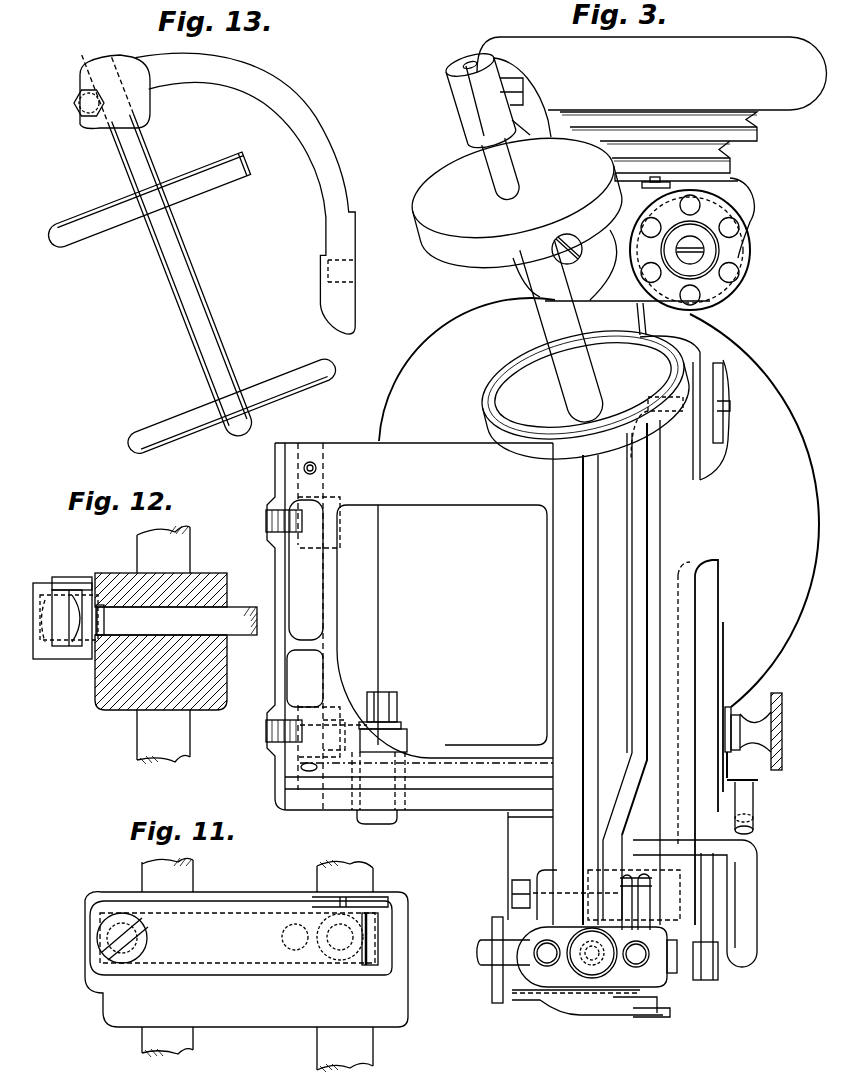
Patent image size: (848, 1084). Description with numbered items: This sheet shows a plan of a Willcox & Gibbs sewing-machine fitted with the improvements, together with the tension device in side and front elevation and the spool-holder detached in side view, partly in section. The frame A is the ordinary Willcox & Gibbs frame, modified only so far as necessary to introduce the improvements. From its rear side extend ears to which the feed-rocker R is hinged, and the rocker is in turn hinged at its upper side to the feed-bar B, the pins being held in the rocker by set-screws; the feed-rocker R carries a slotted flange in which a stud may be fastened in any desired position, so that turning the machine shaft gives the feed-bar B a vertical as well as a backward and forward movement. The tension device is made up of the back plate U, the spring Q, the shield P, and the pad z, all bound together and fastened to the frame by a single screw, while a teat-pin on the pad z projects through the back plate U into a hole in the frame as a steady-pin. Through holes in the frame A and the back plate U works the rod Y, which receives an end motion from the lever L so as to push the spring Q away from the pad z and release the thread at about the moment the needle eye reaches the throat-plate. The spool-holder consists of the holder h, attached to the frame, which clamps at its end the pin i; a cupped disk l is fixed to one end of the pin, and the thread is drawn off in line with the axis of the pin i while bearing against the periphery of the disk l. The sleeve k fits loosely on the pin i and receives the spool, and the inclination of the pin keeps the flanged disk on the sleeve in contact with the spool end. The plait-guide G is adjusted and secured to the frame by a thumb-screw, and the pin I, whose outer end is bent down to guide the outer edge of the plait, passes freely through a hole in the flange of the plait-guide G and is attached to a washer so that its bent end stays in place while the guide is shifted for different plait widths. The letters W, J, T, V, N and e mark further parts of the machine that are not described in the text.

In FIG. 3, the drum W is at (652, 73).
In FIG. 13, the holder h is at (246, 193).
In FIG. 3, the holder h is at (522, 97).
In FIG. 13, the pin i is at (180, 274).
In FIG. 3, the pin i is at (500, 168).
In FIG. 13, the wheel J is at (150, 199).
In FIG. 3, the wheel J is at (513, 543).
In FIG. 11, the wheel J is at (167, 957).
In FIG. 13, the sleeve k is at (189, 314).
In FIG. 3, the sleeve k is at (561, 331).
In FIG. 13, the cupped disk l is at (232, 406).
In FIG. 3, the cupped disk l is at (582, 386).
In FIG. 3, the hand wheel T is at (690, 250).
In FIG. 3, the frame A is at (473, 684).
In FIG. 12, the frame A is at (161, 645).
In FIG. 11, the frame A is at (246, 959).
In FIG. 3, the feed-rocker R is at (316, 626).
In FIG. 3, the feed-bar B is at (419, 758).
In FIG. 3, the plait-guide G is at (700, 770).
In FIG. 3, the rod Y is at (625, 671).
In FIG. 12, the rod Y is at (177, 621).
In FIG. 3, the lever L is at (665, 672).
In FIG. 3, the pin I is at (695, 903).
In FIG. 3, the pins V is at (636, 894).
In FIG. 3, the roller N is at (636, 954).
In FIG. 11, the roller N is at (345, 966).
In FIG. 3, the shield P is at (577, 974).
In FIG. 12, the shield P is at (61, 621).
In FIG. 11, the shield P is at (241, 936).
In FIG. 12, the back plate U is at (72, 579).
In FIG. 12, the spring Q is at (67, 618).
In FIG. 12, the pad z is at (76, 618).
In FIG. 11, the slot e is at (370, 939).